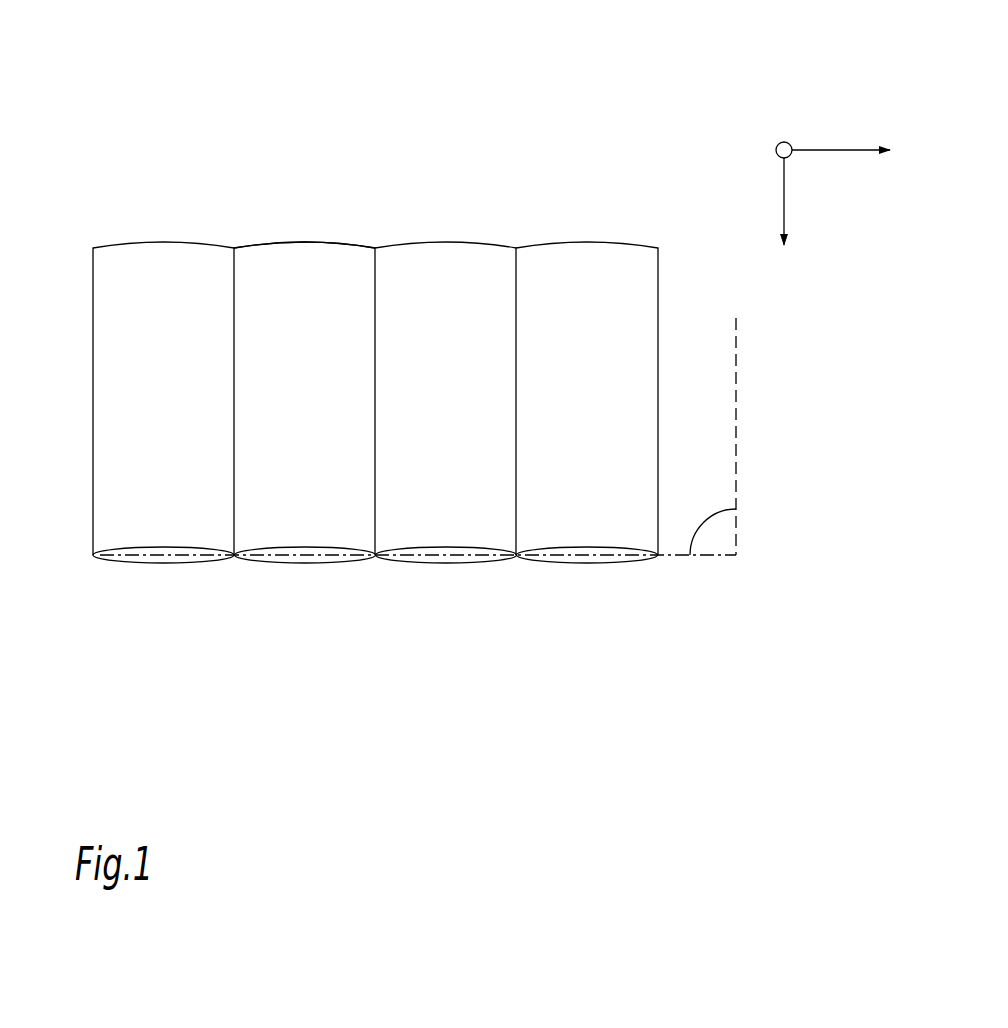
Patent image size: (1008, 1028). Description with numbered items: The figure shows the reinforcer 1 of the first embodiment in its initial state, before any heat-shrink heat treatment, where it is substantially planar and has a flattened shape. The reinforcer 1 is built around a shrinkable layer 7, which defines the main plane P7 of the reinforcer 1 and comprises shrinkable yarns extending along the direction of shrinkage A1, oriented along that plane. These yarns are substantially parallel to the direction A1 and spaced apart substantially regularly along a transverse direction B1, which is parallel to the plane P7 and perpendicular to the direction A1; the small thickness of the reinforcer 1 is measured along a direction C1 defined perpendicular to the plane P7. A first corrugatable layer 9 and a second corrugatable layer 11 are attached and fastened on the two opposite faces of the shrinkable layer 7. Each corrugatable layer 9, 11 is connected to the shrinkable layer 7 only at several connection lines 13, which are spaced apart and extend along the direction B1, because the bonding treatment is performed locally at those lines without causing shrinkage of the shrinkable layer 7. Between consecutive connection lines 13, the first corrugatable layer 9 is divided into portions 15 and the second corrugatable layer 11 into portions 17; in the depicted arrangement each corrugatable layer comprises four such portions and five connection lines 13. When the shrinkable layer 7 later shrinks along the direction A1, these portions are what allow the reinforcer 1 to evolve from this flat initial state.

The reinforcer 1 is at (492, 188).
The shrinkable layer 7 is at (163, 557).
The first corrugatable layer 9 is at (280, 285).
The second corrugatable layer 11 is at (303, 565).
The connection lines 13 is at (90, 401).
The portions of the first corrugatable layer 15 is at (376, 417).
The portions of the second corrugatable layer 17 is at (458, 565).
The main plane P7 is at (713, 436).
The thickness direction C1 is at (779, 137).
The direction of shrinkage A1 is at (841, 136).
The transverse direction B1 is at (799, 201).